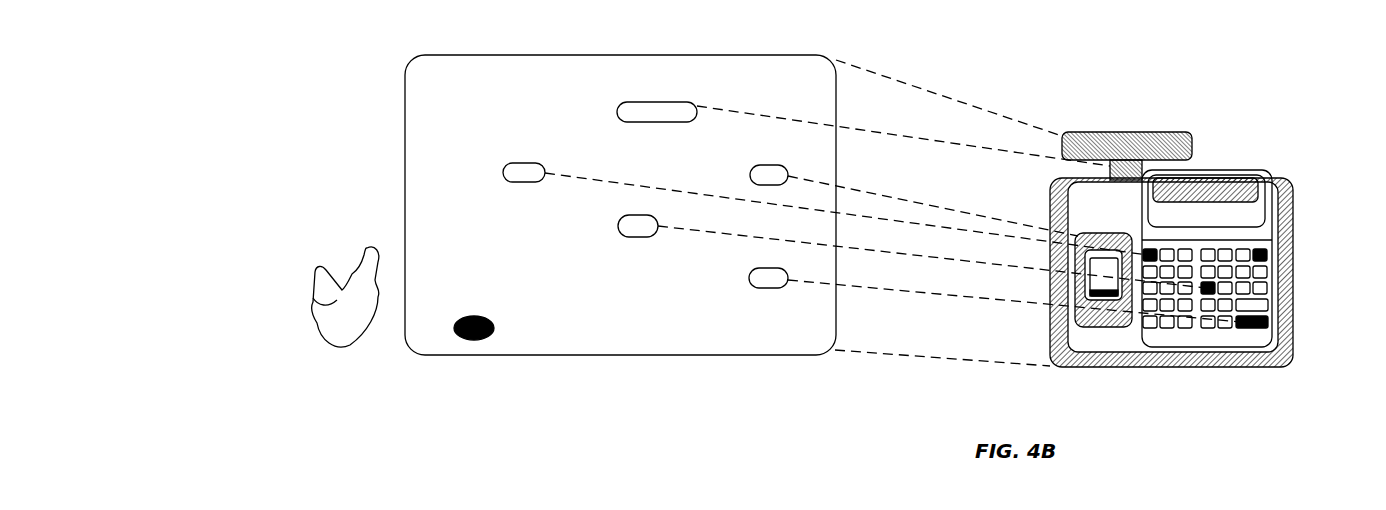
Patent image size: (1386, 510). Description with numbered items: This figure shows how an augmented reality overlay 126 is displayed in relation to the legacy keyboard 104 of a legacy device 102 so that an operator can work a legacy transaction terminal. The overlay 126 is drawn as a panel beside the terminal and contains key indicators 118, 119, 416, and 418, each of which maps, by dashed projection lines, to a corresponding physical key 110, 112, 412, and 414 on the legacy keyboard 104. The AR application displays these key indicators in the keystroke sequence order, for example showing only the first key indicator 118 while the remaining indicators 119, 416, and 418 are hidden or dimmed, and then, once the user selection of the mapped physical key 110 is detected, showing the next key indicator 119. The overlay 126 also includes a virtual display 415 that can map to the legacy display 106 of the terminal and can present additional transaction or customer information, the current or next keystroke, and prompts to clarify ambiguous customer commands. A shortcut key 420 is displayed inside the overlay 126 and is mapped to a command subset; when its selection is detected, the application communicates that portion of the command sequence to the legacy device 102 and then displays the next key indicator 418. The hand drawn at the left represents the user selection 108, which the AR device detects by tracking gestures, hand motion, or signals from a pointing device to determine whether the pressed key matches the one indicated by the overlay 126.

The legacy device 102 is at (1120, 132).
The legacy keyboard 104 is at (1240, 356).
The legacy display 106 is at (1252, 180).
The user selection 108 is at (315, 304).
The physical key 110 is at (1207, 285).
The physical key 112 is at (1262, 254).
The key indicator 118 is at (643, 238).
The key indicator 119 is at (762, 166).
The overlay 126 is at (405, 145).
The physical key 412 is at (1266, 322).
The physical key 414 is at (1148, 252).
The virtual display 415 is at (647, 103).
The key indicator 416 is at (518, 163).
The key indicator 418 is at (768, 290).
The shortcut key 420 is at (470, 316).